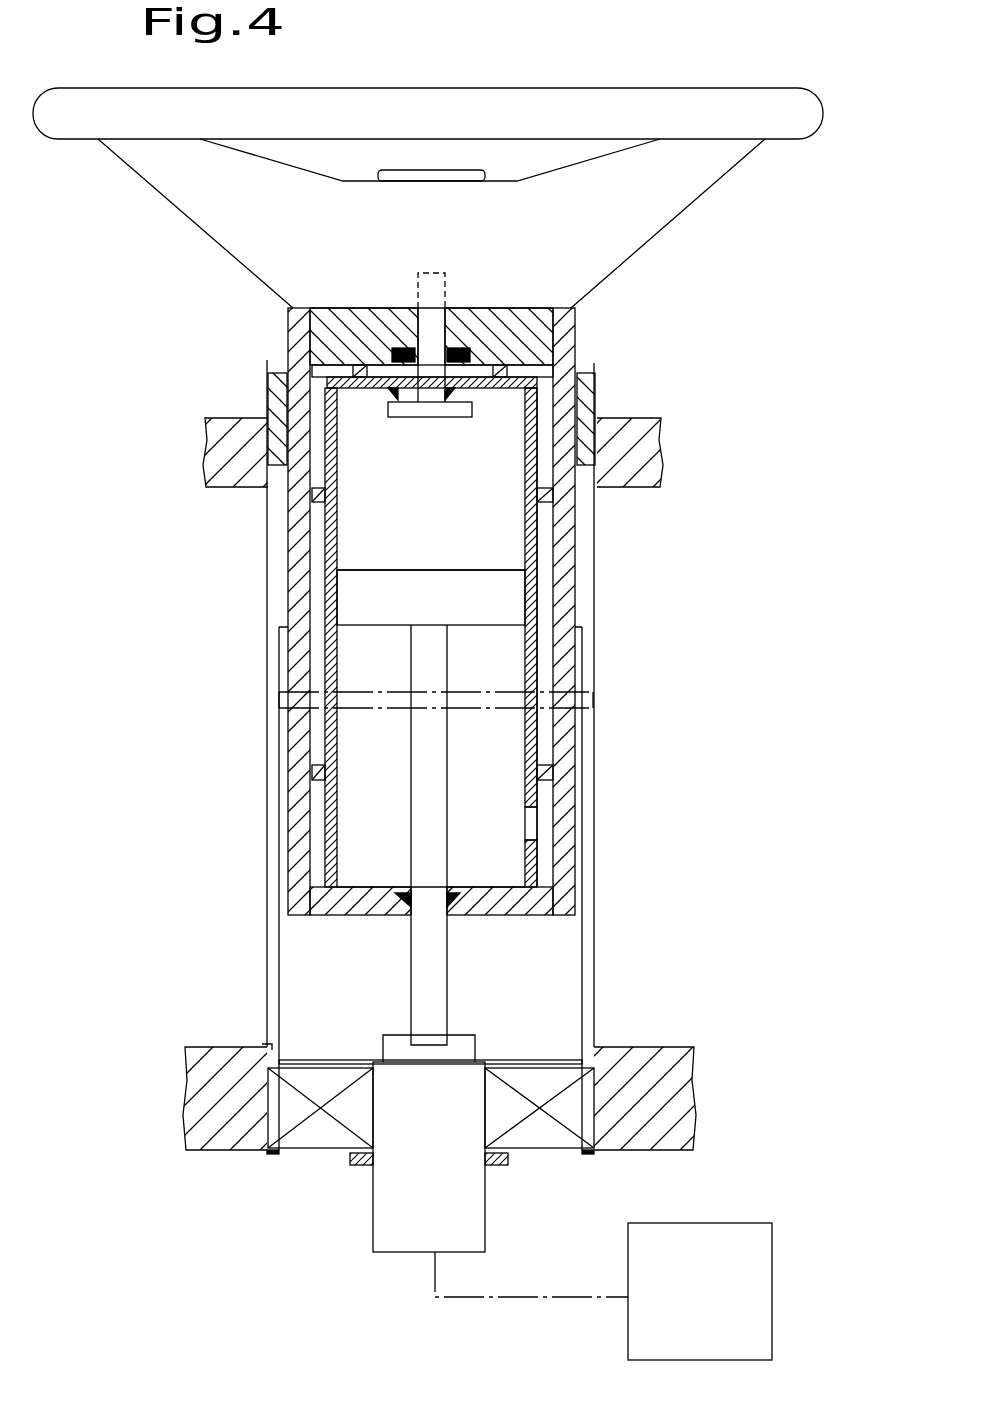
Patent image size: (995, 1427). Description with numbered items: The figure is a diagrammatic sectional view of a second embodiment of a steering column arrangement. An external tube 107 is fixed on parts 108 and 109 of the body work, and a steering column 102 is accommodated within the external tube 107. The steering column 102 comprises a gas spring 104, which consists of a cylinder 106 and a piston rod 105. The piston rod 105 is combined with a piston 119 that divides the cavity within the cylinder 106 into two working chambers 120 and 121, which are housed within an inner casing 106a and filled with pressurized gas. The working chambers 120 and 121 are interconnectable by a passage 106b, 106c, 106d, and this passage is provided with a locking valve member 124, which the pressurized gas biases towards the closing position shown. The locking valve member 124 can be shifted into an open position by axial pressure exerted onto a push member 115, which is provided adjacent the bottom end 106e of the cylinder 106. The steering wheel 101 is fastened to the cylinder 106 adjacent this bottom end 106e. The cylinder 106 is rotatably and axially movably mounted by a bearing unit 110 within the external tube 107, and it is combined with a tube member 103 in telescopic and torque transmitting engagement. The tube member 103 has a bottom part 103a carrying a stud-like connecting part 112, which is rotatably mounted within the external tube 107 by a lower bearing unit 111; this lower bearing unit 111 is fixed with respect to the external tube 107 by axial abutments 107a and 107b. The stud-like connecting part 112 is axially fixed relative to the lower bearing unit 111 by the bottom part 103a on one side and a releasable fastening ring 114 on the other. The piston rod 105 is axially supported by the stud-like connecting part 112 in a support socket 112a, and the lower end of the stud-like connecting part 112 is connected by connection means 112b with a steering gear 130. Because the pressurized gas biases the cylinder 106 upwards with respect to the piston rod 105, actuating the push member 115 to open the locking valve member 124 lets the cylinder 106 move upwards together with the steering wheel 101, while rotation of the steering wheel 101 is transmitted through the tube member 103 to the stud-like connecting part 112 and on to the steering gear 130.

The steering wheel 101 is at (503, 105).
The steering column 102 is at (582, 346).
The tube member 103 is at (583, 937).
The bottom part 103a is at (530, 1055).
The gas spring 104 is at (583, 610).
The piston rod 105 is at (418, 972).
The cylinder 106 is at (567, 740).
The inner casing 106a is at (540, 563).
The passage 106b is at (451, 394).
The passage 106c is at (548, 483).
The passage 106d is at (512, 818).
The bottom end 106e is at (487, 306).
The external tube 107 is at (594, 778).
The axial abutment 107a is at (268, 1153).
The axial abutment 107b is at (267, 1043).
The body work part 108 is at (230, 465).
The body work part 109 is at (213, 1073).
The bearing unit 110 is at (280, 398).
The lower bearing unit 111 is at (318, 1137).
The stud-like connecting part 112 is at (467, 1220).
The support socket 112a is at (452, 1037).
The connection means 112b is at (532, 1303).
The releasable fastening ring 114 is at (503, 1167).
The push member 115 is at (423, 337).
The piston 119 is at (393, 590).
The working chamber 120 is at (431, 520).
The working chamber 121 is at (433, 812).
The locking valve member 124 is at (404, 420).
The steering gear 130 is at (703, 1237).